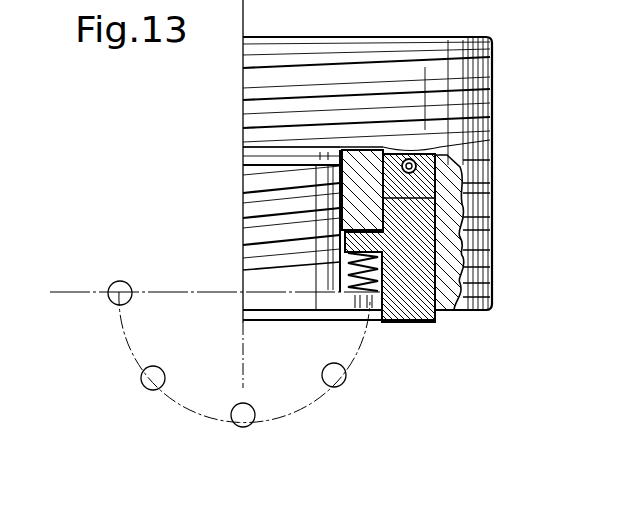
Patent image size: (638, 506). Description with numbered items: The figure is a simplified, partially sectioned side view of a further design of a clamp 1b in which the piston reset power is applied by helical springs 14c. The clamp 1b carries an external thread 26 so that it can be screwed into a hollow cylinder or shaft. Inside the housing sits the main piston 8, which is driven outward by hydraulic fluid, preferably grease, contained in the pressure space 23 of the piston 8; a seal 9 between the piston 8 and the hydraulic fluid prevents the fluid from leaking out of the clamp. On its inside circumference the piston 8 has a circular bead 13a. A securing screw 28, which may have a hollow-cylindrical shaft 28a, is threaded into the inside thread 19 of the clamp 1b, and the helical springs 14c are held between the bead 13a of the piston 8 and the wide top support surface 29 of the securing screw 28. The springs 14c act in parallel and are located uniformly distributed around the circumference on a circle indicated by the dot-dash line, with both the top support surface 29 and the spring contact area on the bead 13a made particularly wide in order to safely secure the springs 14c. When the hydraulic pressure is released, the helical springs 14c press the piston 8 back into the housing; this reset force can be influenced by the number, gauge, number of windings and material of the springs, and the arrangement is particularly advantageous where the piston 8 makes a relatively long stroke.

The external thread 26 is at (497, 56).
The clamp 1b is at (442, 108).
The pressure space 23 is at (423, 151).
The seal 9 is at (443, 183).
The piston 8 is at (493, 282).
The inside thread 19 is at (318, 166).
The hollow-cylindrical shaft 28a is at (317, 224).
The securing screw 28 is at (252, 243).
The circular bead 13a is at (343, 233).
The top support surface 29 is at (348, 301).
The helical springs 14c is at (110, 303).